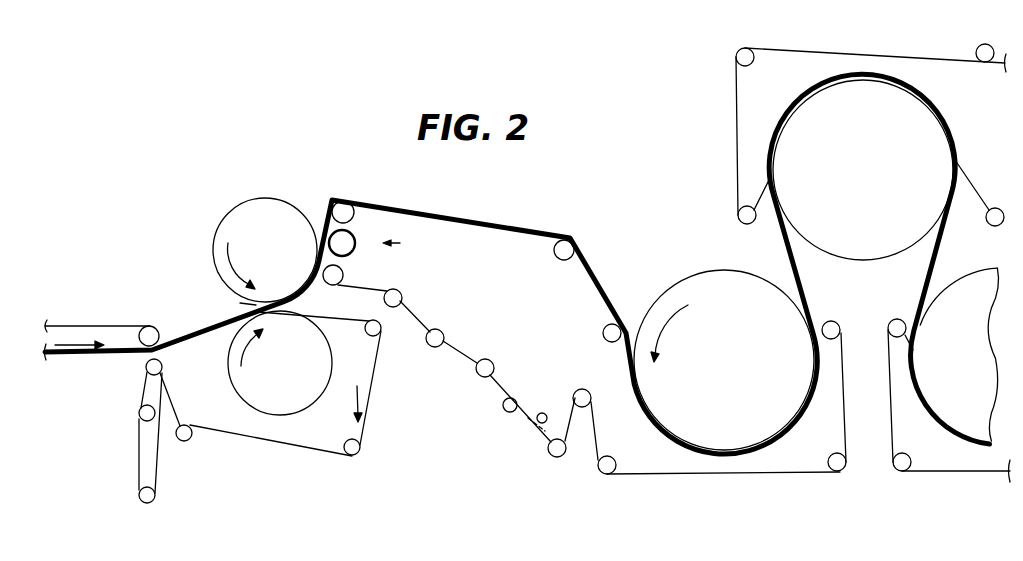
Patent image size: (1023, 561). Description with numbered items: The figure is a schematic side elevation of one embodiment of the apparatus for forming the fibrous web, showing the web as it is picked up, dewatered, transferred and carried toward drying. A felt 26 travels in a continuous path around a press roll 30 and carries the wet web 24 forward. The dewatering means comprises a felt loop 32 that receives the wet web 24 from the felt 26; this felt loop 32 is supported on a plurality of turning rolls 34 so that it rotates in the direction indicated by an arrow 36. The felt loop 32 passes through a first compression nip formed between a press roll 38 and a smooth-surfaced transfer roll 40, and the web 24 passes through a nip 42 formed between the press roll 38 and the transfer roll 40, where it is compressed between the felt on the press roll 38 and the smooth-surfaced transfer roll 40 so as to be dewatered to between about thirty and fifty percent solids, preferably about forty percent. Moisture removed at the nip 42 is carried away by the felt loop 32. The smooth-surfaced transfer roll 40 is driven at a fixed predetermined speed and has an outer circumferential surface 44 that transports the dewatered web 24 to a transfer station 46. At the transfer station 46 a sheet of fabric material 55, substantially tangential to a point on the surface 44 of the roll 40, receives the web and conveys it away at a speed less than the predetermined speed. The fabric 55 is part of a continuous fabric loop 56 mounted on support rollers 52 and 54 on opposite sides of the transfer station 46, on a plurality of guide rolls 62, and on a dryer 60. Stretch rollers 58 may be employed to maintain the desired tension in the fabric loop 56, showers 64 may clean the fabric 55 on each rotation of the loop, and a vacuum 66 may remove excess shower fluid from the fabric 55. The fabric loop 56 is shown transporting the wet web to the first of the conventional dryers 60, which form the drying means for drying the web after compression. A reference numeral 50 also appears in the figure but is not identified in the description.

The web 24 is at (102, 354).
The felt 26 is at (107, 324).
The press roll 30 is at (151, 326).
The felt loop 32 is at (310, 449).
The turning rolls 34 is at (162, 364).
The arrow 36 is at (345, 404).
The press roll 38 is at (240, 391).
The smooth-surfaced transfer roll 40 is at (250, 214).
The nip 42 is at (240, 303).
The outer circumferential surface 44 is at (290, 198).
The transfer station 46 is at (405, 243).
The pressure roller 50 is at (355, 243).
The support roller 52 is at (343, 200).
The support roller 54 is at (335, 286).
The sheet of fabric material 55 is at (344, 282).
The continuous fabric loop 56 is at (720, 474).
The stretch rollers 58 is at (567, 241).
The dryers 60 is at (740, 276).
The guide rolls 62 is at (402, 296).
The showers 64 is at (543, 413).
The vacuum 66 is at (503, 404).